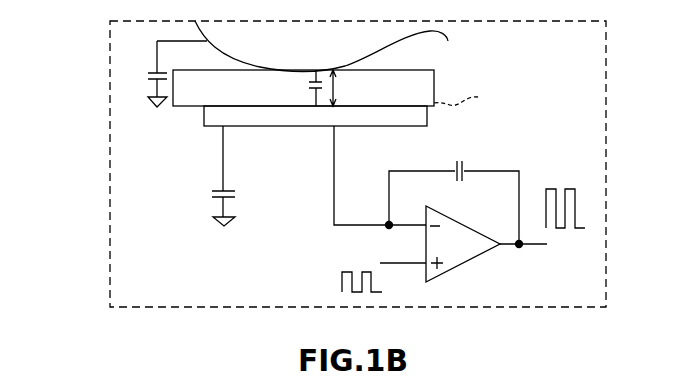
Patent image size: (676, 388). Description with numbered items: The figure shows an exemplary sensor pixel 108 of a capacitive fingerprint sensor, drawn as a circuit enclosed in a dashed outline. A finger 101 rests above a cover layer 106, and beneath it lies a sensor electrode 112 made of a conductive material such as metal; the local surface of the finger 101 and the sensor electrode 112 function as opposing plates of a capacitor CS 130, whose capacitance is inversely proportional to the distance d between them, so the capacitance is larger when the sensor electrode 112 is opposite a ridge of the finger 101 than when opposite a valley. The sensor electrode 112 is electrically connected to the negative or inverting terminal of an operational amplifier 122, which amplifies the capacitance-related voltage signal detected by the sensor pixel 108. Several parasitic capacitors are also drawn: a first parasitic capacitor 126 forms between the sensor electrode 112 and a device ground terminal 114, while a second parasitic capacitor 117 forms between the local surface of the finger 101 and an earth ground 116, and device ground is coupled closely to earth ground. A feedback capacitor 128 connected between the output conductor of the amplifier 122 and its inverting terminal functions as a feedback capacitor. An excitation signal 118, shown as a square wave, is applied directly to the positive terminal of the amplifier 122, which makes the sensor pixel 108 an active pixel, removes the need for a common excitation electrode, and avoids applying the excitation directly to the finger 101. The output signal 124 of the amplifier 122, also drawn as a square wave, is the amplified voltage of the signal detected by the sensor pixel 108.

The sensor pixel 108 is at (108, 100).
The finger 101 is at (237, 55).
The cover layer 106 is at (407, 87).
The sensor electrode 112 is at (413, 115).
The parasitic capacitor CP2 117 is at (157, 58).
The earth ground 116 is at (157, 105).
The capacitor CS 130 is at (311, 88).
The parasitic capacitor CP1 126 is at (214, 196).
The device ground terminal 114 is at (215, 222).
The capacitor CF 128 is at (458, 160).
The operational amplifier 122 is at (455, 222).
The output signal 124 is at (530, 246).
The excitation signal Vin 118 is at (402, 265).